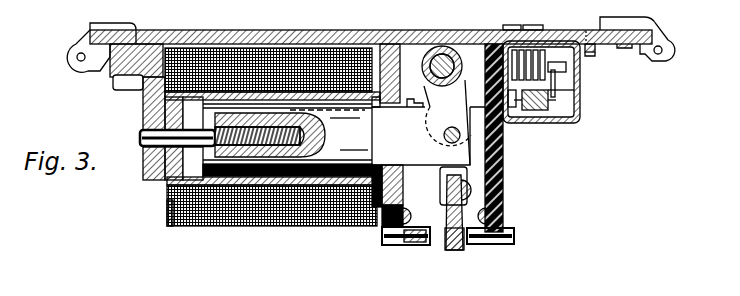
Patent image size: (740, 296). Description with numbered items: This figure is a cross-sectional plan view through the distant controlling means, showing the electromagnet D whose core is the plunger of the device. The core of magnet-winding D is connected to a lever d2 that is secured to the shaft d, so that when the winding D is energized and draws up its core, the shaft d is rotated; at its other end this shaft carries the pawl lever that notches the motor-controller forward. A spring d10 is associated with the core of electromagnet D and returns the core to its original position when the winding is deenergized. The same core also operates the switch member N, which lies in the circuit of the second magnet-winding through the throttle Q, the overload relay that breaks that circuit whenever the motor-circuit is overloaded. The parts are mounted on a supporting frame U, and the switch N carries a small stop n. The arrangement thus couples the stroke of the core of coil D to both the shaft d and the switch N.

The base plate U is at (243, 30).
The magnet-winding D is at (237, 226).
The spring d10 is at (200, 157).
The shaft d is at (433, 63).
The lever d2 is at (458, 80).
The stop n is at (411, 99).
The throttle Q is at (538, 124).
The switch member N is at (462, 243).